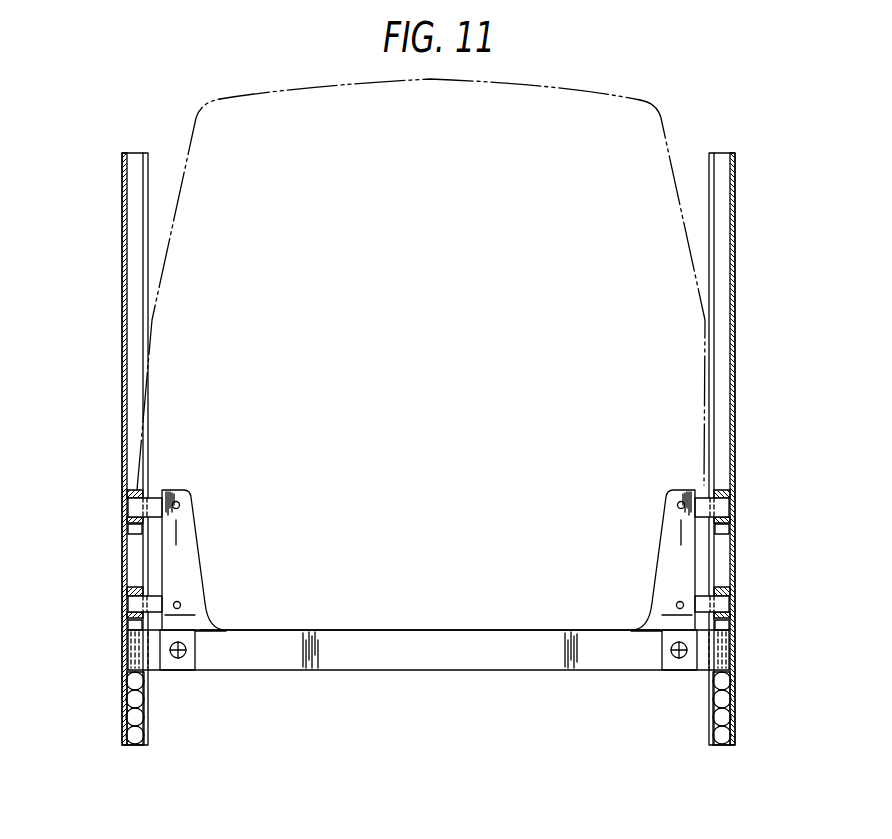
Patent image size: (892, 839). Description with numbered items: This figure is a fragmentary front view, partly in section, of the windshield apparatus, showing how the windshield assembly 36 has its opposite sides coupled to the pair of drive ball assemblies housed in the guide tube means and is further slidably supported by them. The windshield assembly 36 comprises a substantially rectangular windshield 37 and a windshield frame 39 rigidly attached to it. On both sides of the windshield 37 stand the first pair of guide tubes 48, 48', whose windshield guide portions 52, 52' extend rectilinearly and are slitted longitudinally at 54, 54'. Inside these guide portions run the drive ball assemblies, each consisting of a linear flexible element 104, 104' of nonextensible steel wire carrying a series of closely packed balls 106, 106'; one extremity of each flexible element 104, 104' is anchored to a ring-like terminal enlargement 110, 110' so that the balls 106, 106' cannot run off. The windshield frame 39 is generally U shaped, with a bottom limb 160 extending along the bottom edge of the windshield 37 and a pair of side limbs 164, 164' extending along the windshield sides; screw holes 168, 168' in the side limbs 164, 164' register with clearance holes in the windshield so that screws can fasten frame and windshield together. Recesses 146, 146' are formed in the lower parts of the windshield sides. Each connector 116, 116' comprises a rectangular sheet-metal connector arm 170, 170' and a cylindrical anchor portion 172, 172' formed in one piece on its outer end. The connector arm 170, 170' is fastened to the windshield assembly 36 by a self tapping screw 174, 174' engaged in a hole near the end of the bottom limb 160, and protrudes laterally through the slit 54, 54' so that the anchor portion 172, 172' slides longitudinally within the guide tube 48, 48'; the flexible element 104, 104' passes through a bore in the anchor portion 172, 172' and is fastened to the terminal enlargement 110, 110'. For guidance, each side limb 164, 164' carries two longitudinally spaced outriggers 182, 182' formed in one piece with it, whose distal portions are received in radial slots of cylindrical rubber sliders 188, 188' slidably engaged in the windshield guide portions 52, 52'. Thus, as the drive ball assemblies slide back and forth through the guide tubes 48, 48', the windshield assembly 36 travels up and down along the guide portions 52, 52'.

The windshield assembly 36 is at (407, 274).
The windshield 37 is at (614, 98).
The windshield frame 39 is at (428, 616).
The guide tube 48 is at (769, 449).
The guide tube 48' is at (93, 449).
The windshield guide portion 52 is at (723, 449).
The windshield guide portion 52' is at (142, 449).
The slit 54 is at (676, 449).
The slit 54' is at (187, 449).
The linear flexible element 104 is at (687, 712).
The linear flexible element 104' is at (99, 708).
The balls 106 is at (758, 708).
The balls 106' is at (97, 708).
The terminal enlargement 110 is at (755, 622).
The terminal enlargement 110' is at (96, 633).
The connector 116 is at (616, 616).
The connector 116' is at (244, 620).
The recess 146 is at (760, 527).
The recess 146' is at (96, 526).
The bottom limb 160 is at (371, 630).
The side limb 164 is at (647, 560).
The side limb 164' is at (212, 560).
The screw holes 168 is at (645, 531).
The screw holes 168' is at (216, 533).
The connector arm 170 is at (658, 680).
The connector arm 170' is at (202, 678).
The anchor portion 172 is at (753, 653).
The anchor portion 172' is at (100, 653).
The self tapping screw 174 is at (642, 676).
The self tapping screw 174' is at (175, 692).
The outriggers 182 is at (734, 521).
The outriggers 182' is at (191, 528).
The sliders 188 is at (754, 536).
The sliders 188' is at (96, 540).